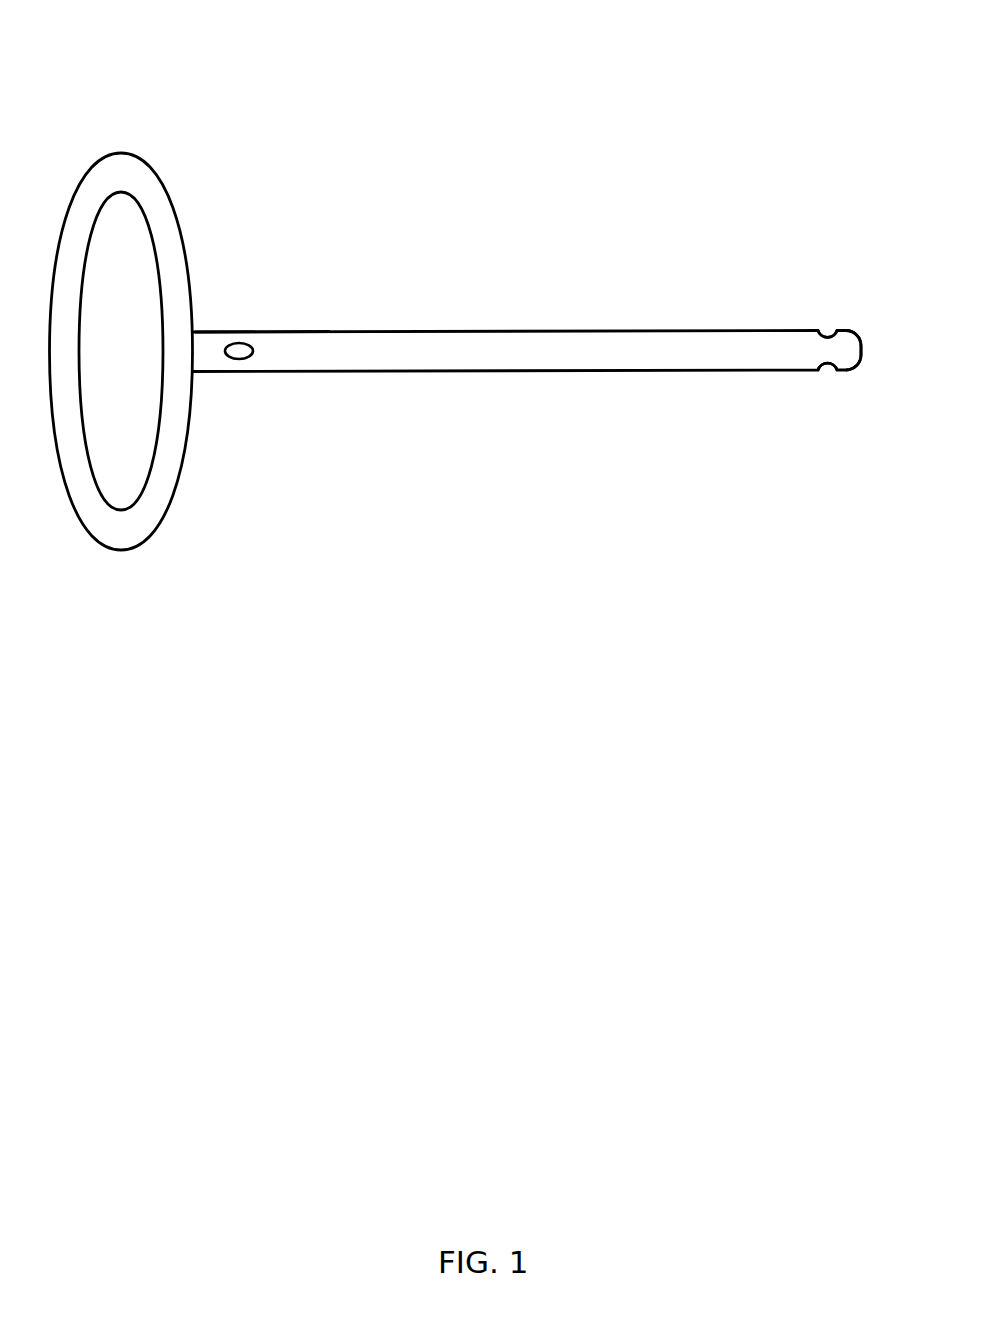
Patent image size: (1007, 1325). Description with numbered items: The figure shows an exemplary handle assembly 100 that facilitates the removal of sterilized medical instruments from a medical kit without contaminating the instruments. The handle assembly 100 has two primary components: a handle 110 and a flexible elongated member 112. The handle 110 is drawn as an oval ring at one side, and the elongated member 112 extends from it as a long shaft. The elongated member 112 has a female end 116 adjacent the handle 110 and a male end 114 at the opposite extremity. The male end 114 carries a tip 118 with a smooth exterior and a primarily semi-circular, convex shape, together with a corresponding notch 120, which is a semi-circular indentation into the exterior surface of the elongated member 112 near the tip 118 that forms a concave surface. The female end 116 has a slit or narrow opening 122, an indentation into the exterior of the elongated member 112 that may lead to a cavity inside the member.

The handle assembly 100 is at (595, 80).
The handle 110 is at (152, 153).
The elongated member 112 is at (552, 329).
The male end 114 is at (832, 292).
The female end 116 is at (278, 329).
The tip 118 is at (878, 348).
The notch 120 is at (846, 372).
The opening 122 is at (259, 353).